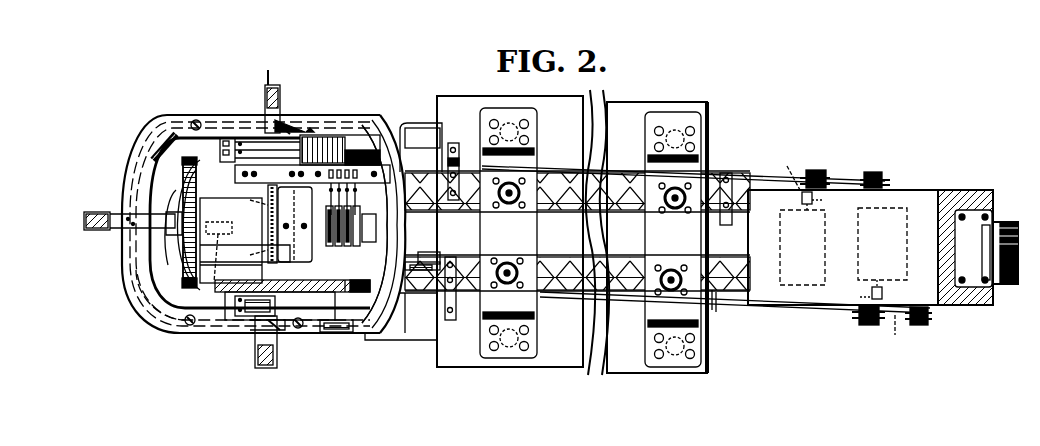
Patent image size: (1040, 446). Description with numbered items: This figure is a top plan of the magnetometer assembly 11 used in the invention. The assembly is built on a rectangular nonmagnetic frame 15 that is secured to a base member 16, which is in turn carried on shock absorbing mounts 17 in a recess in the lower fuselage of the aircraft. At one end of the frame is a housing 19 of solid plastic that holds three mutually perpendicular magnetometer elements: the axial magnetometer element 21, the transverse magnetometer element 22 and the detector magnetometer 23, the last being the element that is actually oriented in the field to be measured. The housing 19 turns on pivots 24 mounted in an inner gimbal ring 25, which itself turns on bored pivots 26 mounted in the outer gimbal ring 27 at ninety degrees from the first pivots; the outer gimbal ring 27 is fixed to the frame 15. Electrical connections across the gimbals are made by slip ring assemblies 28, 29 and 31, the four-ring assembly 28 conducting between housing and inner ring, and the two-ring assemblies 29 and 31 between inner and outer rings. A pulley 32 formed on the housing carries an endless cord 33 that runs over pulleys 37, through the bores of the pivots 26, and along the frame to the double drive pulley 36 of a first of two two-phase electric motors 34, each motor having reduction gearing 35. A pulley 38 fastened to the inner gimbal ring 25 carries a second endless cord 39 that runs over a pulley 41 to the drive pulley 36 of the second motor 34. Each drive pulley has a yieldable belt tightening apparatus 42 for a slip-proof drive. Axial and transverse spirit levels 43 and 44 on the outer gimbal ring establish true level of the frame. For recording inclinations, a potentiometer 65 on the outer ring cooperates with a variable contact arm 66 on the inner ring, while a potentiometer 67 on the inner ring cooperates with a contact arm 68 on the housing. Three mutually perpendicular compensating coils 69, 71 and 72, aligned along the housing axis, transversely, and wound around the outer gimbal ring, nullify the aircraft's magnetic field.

The magnetometer assembly 11 is at (205, 335).
The rectangular nonmagnetic frame 15 is at (590, 215).
The base member 16 is at (600, 95).
The shock absorbing mounts 17 is at (510, 358).
The housing 19 is at (228, 190).
The axial magnetometer element 21 is at (206, 282).
The transverse magnetometer element 22 is at (281, 224).
The detector magnetometer 23 is at (266, 200).
The pivots 24 is at (170, 210).
The inner gimbal ring 25 is at (166, 185).
The pivots 26 is at (268, 130).
The outer gimbal ring 27 is at (160, 145).
The slip ring assembly 28 is at (376, 175).
The slip ring assembly 29 is at (285, 128).
The slip ring assembly 31 is at (290, 296).
The pulley 32 is at (270, 262).
The endless cord 33 is at (552, 172).
The two-phase electric motors 34 is at (784, 222).
The reduction gearing 35 is at (837, 250).
The double drive pulley 36 is at (822, 168).
The pulleys 37 is at (280, 124).
The pulley 38 is at (345, 288).
The endless cord 39 is at (712, 300).
The pulley 41 is at (376, 338).
The yieldable belt tightening apparatus 42 is at (876, 170).
The axial spirit level 43 is at (352, 334).
The transverse spirit level 44 is at (420, 121).
The potentiometer 65 is at (322, 135).
The variable contact arm 66 is at (350, 148).
The potentiometer 67 is at (180, 260).
The contact arm 68 is at (172, 230).
The compensating coil 69 is at (83, 221).
The compensating coil 71 is at (272, 84).
The compensating coil 72 is at (148, 305).